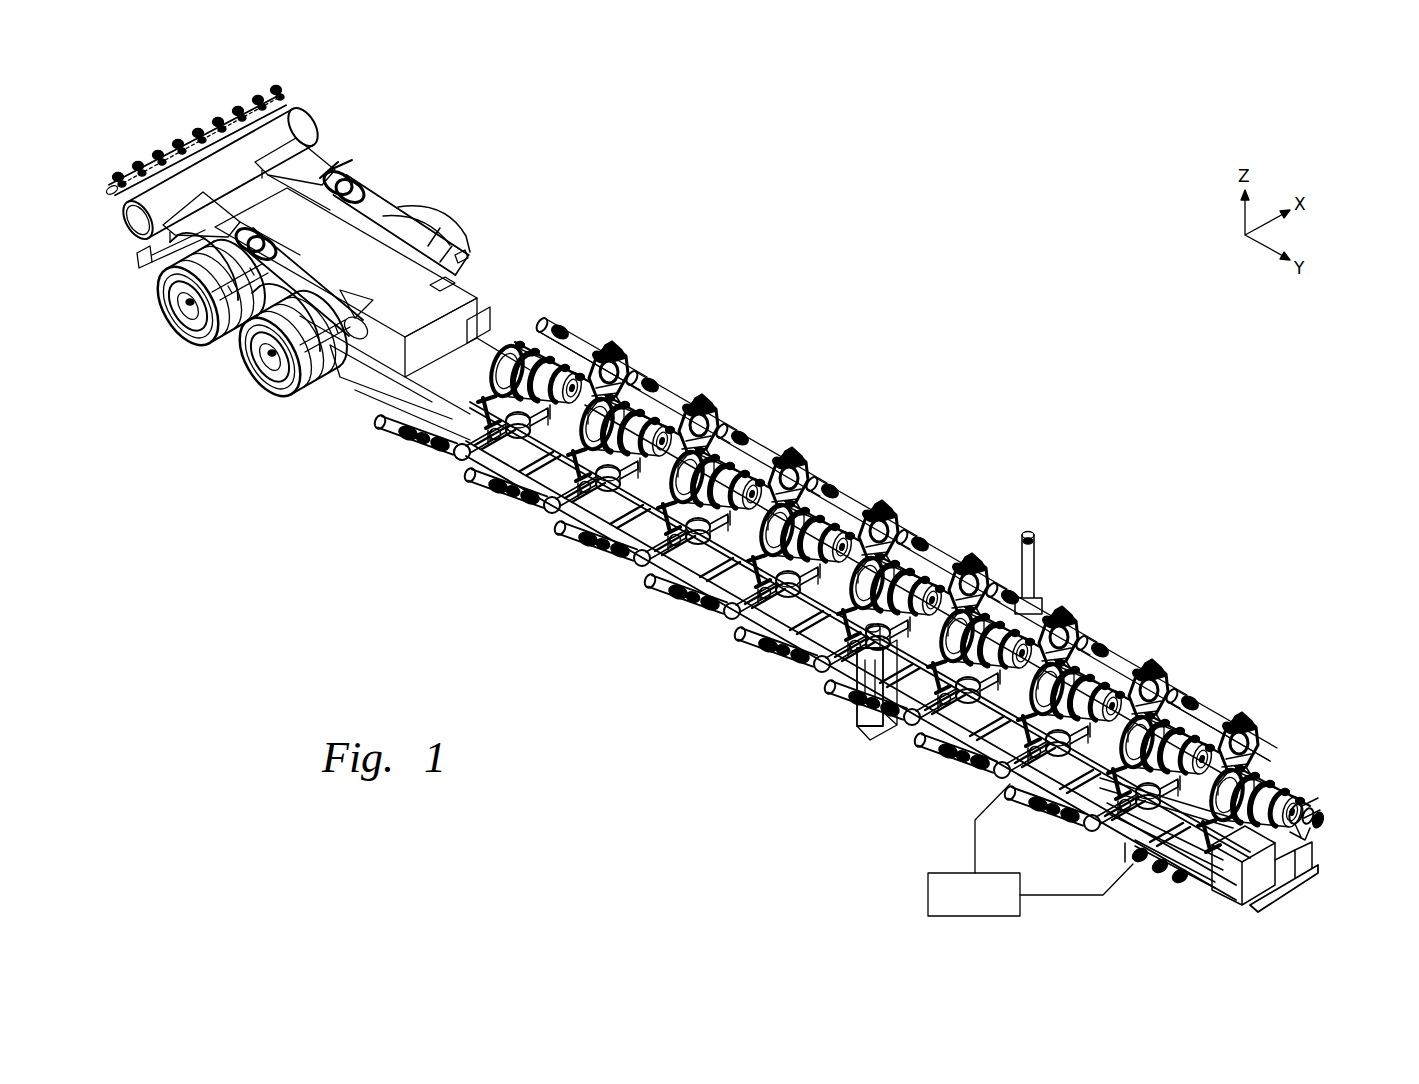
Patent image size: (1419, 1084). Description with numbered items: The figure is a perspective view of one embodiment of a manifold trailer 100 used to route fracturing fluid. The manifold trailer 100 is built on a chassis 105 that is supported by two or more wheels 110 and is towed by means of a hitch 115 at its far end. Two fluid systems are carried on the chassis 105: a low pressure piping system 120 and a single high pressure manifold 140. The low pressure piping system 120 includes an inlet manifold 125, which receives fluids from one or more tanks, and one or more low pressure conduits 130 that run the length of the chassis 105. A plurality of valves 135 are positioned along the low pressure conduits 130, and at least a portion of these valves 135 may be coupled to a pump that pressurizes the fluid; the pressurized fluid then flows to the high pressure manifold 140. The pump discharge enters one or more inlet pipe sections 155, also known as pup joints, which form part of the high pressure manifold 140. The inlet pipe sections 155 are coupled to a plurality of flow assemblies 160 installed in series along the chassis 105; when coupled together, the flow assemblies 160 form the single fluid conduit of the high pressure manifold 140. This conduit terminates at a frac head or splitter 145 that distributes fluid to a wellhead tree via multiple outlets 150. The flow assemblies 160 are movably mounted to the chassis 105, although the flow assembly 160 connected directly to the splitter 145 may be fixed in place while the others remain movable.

The manifold trailer 100 is at (988, 308).
The chassis 105 is at (414, 328).
The wheels 110 is at (190, 343).
The hitch 115 is at (1248, 880).
The low pressure piping system 120 is at (325, 105).
The inlet manifold 125 is at (222, 178).
The low pressure conduits 130 is at (388, 210).
The valves 135 is at (410, 448).
The high pressure manifold 140 is at (526, 546).
The splitter 145 is at (1332, 793).
The outlets 150 is at (1306, 793).
The inlet pipe sections 155 is at (663, 392).
The flow assemblies 160 is at (631, 322).